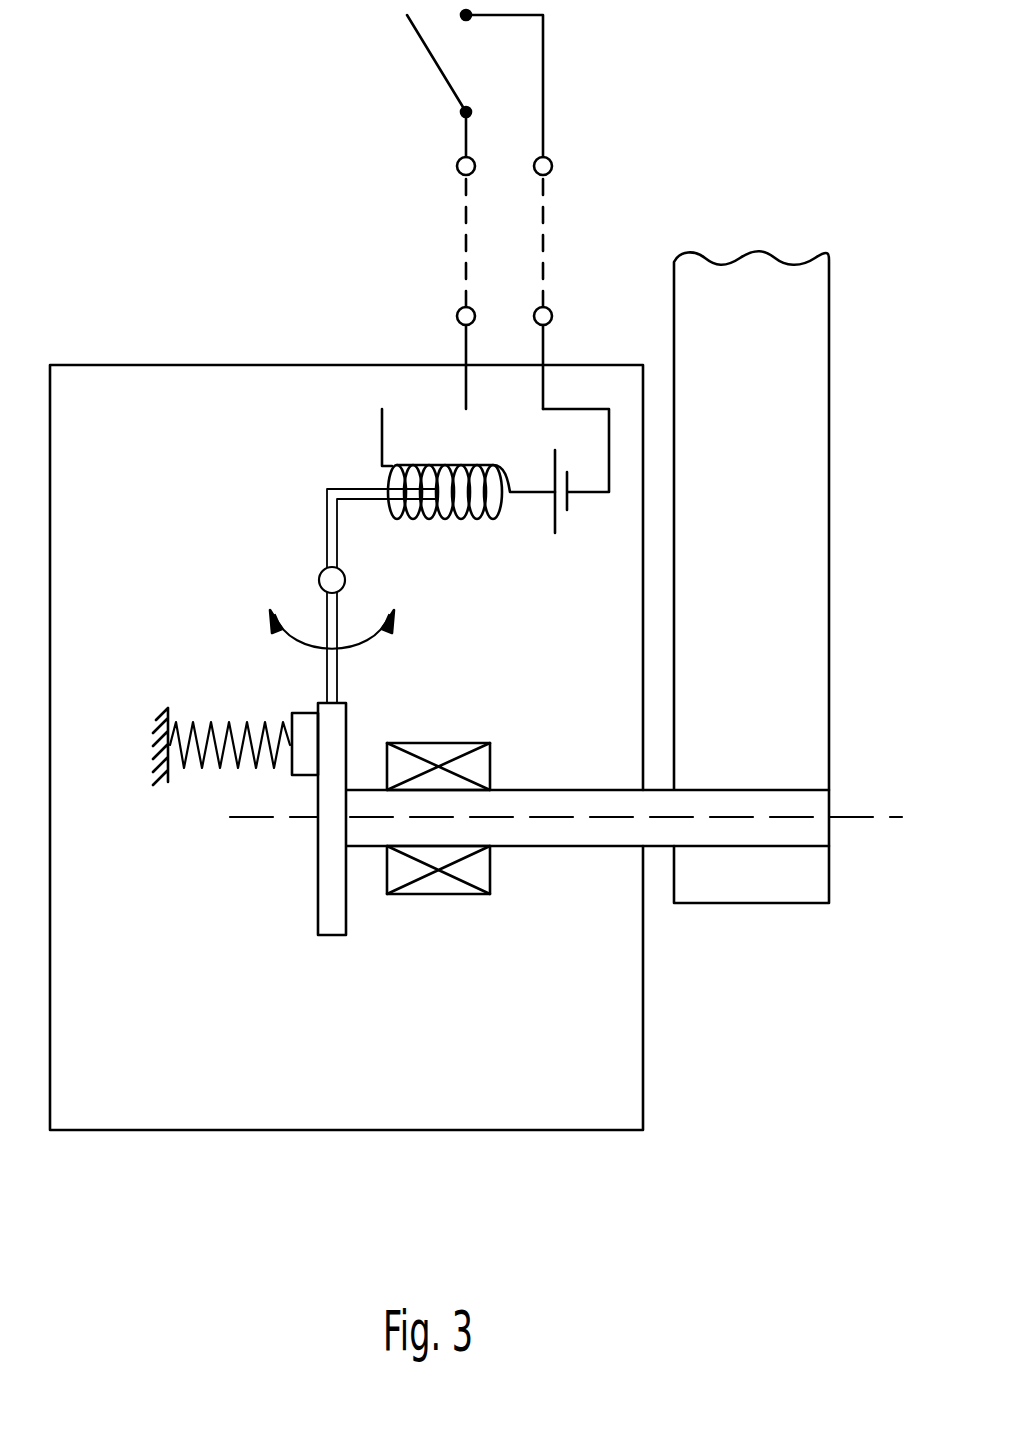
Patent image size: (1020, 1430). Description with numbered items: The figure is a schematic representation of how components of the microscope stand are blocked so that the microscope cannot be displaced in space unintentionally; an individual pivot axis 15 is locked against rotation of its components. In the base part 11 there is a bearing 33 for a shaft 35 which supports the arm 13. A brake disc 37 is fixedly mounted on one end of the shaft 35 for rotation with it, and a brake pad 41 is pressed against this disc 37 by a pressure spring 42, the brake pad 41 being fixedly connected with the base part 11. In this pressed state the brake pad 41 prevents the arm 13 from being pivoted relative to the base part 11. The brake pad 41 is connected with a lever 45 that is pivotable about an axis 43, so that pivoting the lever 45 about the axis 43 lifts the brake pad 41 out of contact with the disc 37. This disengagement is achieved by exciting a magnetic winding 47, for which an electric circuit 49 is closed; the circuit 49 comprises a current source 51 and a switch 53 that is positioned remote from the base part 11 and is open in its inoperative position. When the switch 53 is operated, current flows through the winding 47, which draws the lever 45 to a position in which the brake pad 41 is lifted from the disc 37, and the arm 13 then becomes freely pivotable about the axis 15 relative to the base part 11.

The base part 11 is at (644, 1023).
The arm 13 is at (829, 487).
The axis 15 is at (867, 817).
The bearing 33 is at (416, 894).
The shaft 35 is at (545, 846).
The brake disc 37 is at (333, 935).
The brake pad 41 is at (292, 717).
The pressure spring 42 is at (215, 765).
The axis 43 is at (320, 578).
The lever 45 is at (326, 513).
The magnetic winding 47 is at (467, 522).
The electric circuit 49 is at (582, 218).
The current source 51 is at (555, 520).
The switch 53 is at (408, 75).